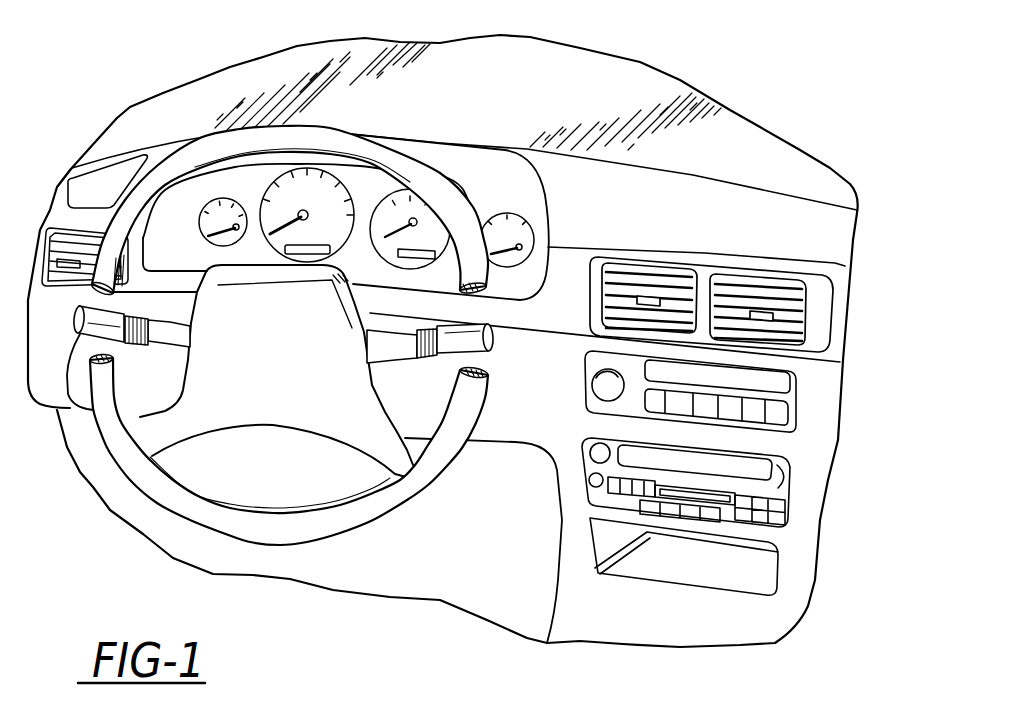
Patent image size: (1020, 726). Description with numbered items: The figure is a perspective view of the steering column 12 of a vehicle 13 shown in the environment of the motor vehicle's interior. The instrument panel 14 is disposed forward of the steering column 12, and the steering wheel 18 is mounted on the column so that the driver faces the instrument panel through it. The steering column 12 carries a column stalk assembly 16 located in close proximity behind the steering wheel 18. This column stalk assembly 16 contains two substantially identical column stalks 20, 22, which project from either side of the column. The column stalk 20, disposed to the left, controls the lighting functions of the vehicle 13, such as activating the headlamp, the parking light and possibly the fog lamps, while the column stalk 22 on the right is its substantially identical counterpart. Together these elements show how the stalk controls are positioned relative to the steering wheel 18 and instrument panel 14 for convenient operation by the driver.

The steering column 12 is at (311, 356).
The vehicle 13 is at (775, 106).
The instrument panel 14 is at (661, 225).
The column stalk assembly 16 is at (91, 428).
The steering wheel 18 is at (370, 512).
The column stalk 20 is at (136, 372).
The column stalk 22 is at (493, 342).